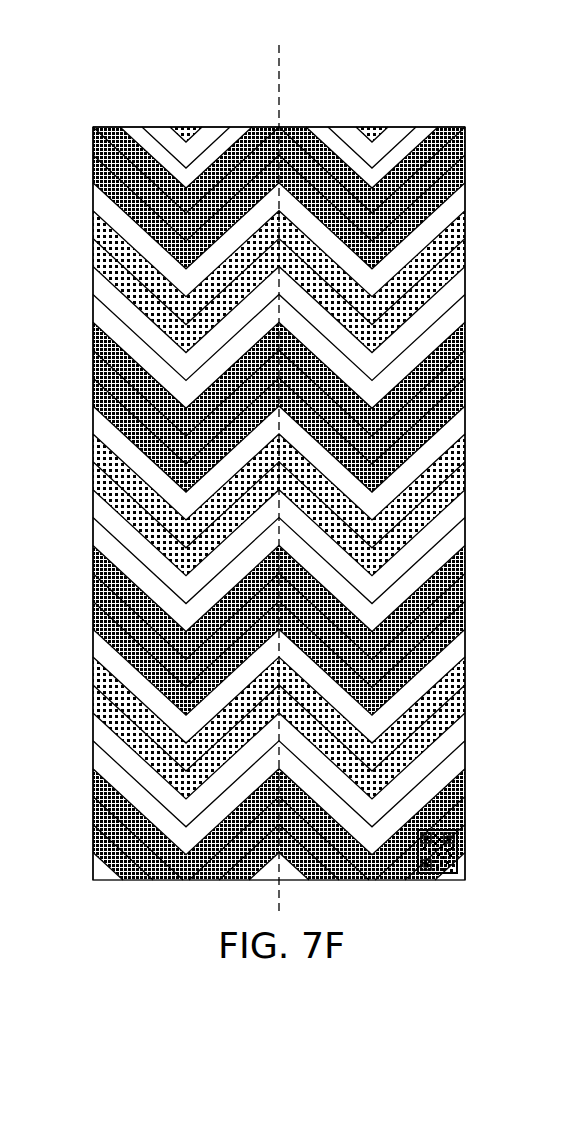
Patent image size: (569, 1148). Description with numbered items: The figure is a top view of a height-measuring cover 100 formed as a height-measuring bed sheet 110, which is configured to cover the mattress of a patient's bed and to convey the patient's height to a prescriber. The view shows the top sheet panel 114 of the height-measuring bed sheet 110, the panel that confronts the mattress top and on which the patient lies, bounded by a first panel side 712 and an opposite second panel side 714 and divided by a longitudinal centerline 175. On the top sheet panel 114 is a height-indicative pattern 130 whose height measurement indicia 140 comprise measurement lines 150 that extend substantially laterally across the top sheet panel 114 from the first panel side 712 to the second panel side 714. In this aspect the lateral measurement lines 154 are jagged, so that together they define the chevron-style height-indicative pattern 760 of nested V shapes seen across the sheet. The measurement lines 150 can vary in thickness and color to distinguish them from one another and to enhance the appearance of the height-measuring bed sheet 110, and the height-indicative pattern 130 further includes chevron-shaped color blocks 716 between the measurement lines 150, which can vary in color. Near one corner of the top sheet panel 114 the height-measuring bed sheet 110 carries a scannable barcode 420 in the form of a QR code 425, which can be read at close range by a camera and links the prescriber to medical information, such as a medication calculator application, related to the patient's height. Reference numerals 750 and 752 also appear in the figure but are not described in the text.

The height-measuring cover 100 is at (325, 462).
The height-measuring bed sheet 110 is at (488, 149).
The top sheet panel 114 is at (163, 229).
The height-indicative pattern 130 is at (330, 407).
The height measurement indicia 140 is at (412, 420).
The measurement lines 150 is at (330, 489).
The lateral measurement lines 154 is at (422, 483).
The longitudinal centerline 175 is at (284, 70).
The scannable barcode 420 is at (486, 846).
The QR code 425 is at (458, 845).
The first panel side 712 is at (93, 292).
The second panel side 714 is at (467, 247).
The color blocks 716 is at (425, 603).
The top edge 750 is at (232, 112).
The top boundary 752 is at (232, 112).
The chevron-style height-indicative pattern 760 is at (487, 322).